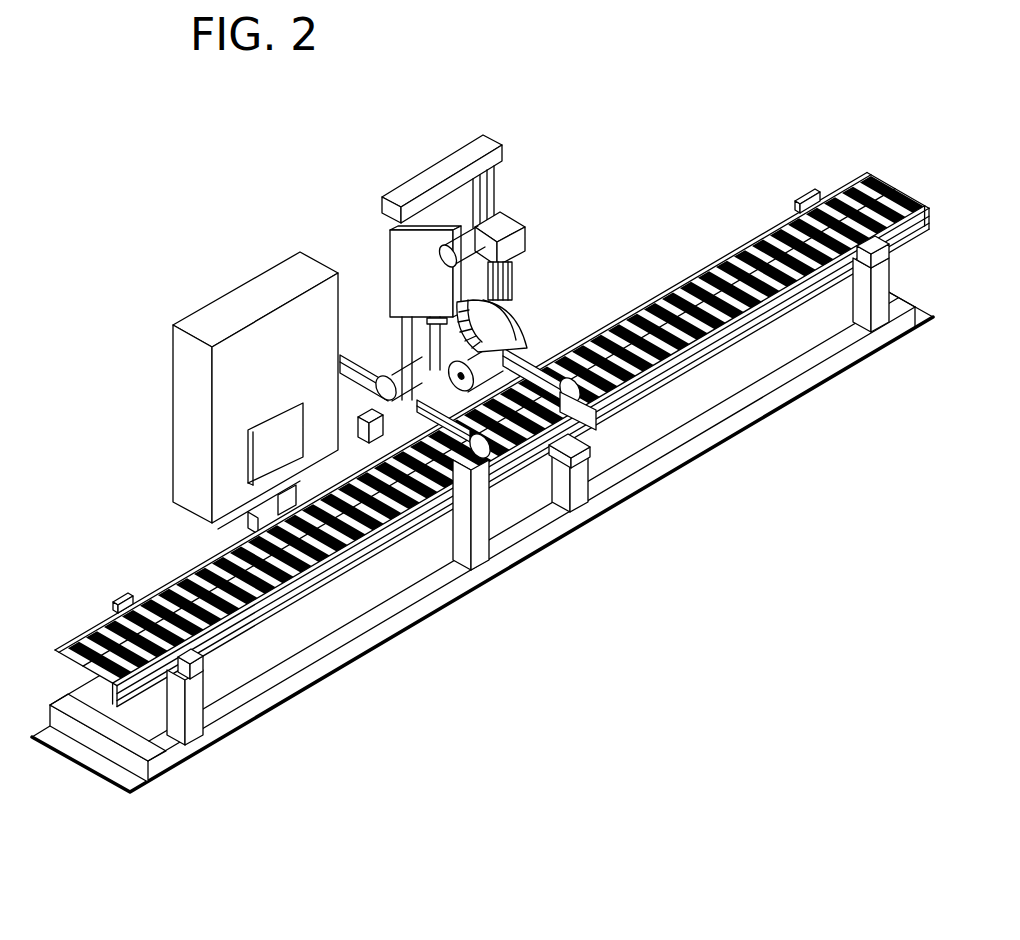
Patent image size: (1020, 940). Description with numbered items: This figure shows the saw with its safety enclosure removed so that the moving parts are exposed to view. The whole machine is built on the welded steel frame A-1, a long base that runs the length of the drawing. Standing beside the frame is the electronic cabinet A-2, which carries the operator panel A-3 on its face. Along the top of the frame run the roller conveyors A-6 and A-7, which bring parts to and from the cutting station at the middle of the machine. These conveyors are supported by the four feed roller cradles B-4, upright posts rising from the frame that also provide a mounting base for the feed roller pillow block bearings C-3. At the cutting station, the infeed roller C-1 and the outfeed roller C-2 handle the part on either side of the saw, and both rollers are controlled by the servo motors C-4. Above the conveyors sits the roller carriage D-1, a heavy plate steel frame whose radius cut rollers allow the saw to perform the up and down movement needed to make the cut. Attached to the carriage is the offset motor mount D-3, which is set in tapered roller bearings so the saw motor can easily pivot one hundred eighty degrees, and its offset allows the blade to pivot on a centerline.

The welded steel frame A-1 is at (663, 467).
The electronic cabinet A-2 is at (240, 310).
The operator panel A-3 is at (280, 447).
The roller conveyor A-6 is at (87, 638).
The roller conveyor A-7 is at (902, 237).
The feed roller cradles B-4 is at (197, 703).
The infeed roller C-1 is at (398, 375).
The outfeed roller C-2 is at (550, 370).
The feed roller pillow block bearings C-3 is at (570, 399).
The servo motors C-4 is at (342, 358).
The roller carriage D-1 is at (418, 260).
The offset motor mount D-3 is at (478, 340).